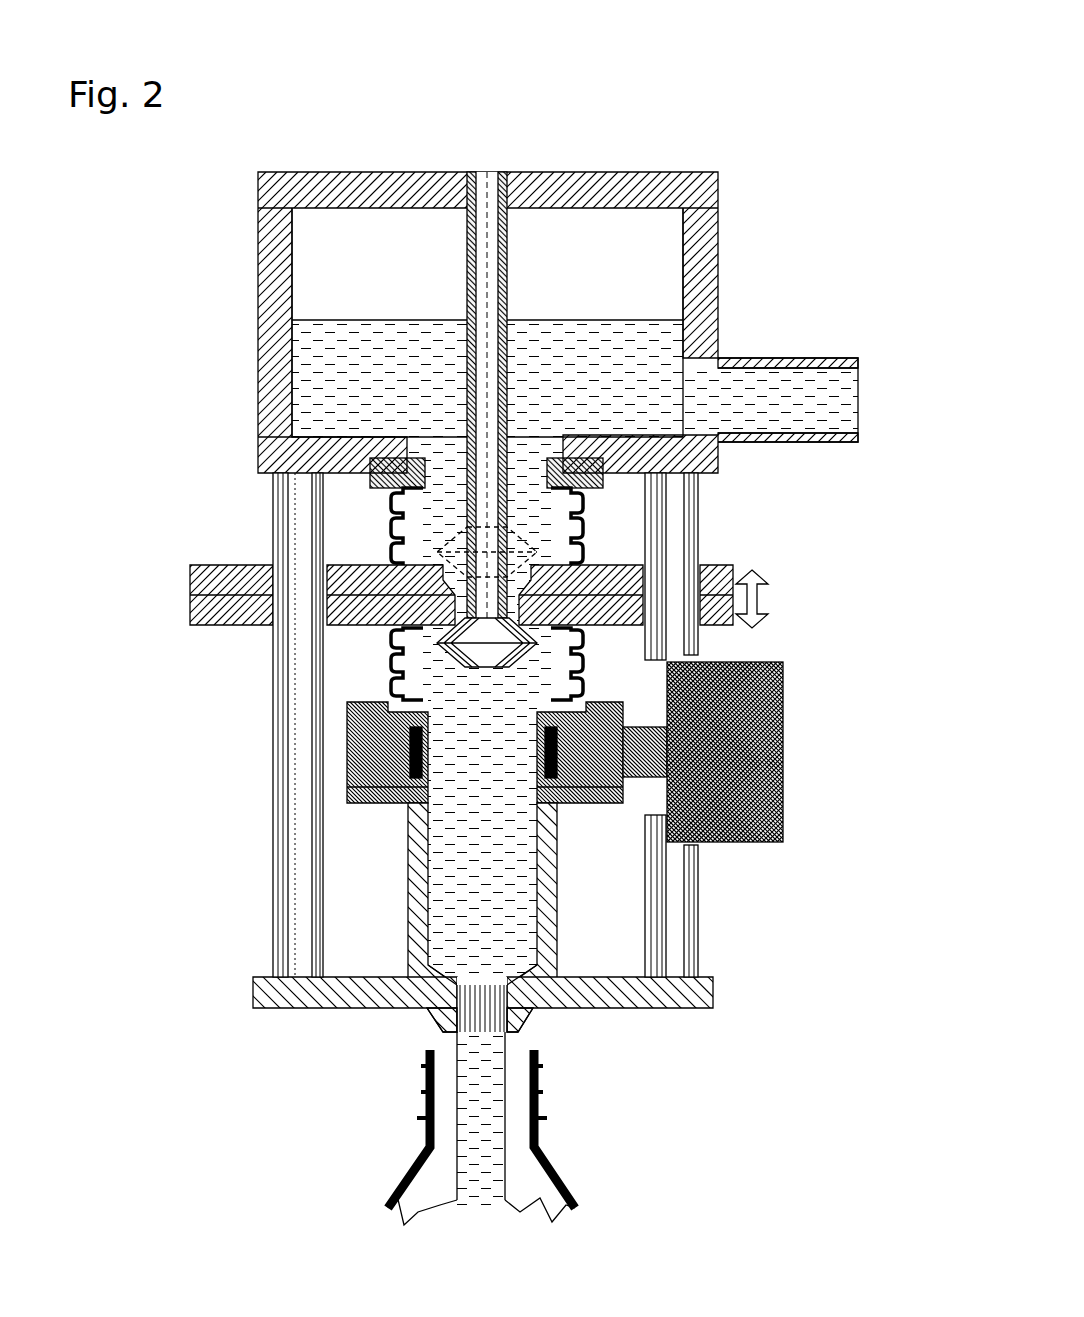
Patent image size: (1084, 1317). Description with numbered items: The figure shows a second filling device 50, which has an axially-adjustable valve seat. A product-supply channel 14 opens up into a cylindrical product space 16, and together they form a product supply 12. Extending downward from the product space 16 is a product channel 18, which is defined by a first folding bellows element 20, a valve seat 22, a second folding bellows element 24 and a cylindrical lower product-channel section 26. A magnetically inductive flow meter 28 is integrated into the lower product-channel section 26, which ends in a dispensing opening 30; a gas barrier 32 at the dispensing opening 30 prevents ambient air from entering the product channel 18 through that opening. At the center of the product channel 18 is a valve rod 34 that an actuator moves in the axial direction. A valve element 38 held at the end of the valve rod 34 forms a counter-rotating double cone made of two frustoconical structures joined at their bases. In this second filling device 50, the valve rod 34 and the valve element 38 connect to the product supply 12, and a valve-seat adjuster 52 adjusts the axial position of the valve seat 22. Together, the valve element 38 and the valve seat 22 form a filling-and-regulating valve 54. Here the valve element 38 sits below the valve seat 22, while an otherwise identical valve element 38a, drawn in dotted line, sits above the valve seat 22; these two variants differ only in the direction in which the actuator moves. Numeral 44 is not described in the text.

The second filling device 50 is at (338, 123).
The product supply 12 is at (749, 234).
The cylindrical product space 16 is at (598, 247).
The product-supply channel 14 is at (760, 398).
The valve rod 34 is at (487, 430).
The first folding bellows element 20 is at (397, 527).
The valve seat 22 is at (415, 590).
The product channel 18 is at (344, 665).
The valve element 38a is at (511, 562).
The valve element 38 is at (510, 645).
The valve-seat adjuster 52 is at (758, 598).
The filling-and-regulating valve 54 is at (606, 648).
The second folding bellows element 24 is at (405, 670).
The magnetically inductive flow meter 28 is at (765, 777).
The cylindrical lower product-channel section 26 is at (599, 868).
The dispensing opening 30 is at (425, 1026).
The gas barrier 32 is at (528, 1010).
The container 44 is at (532, 1160).